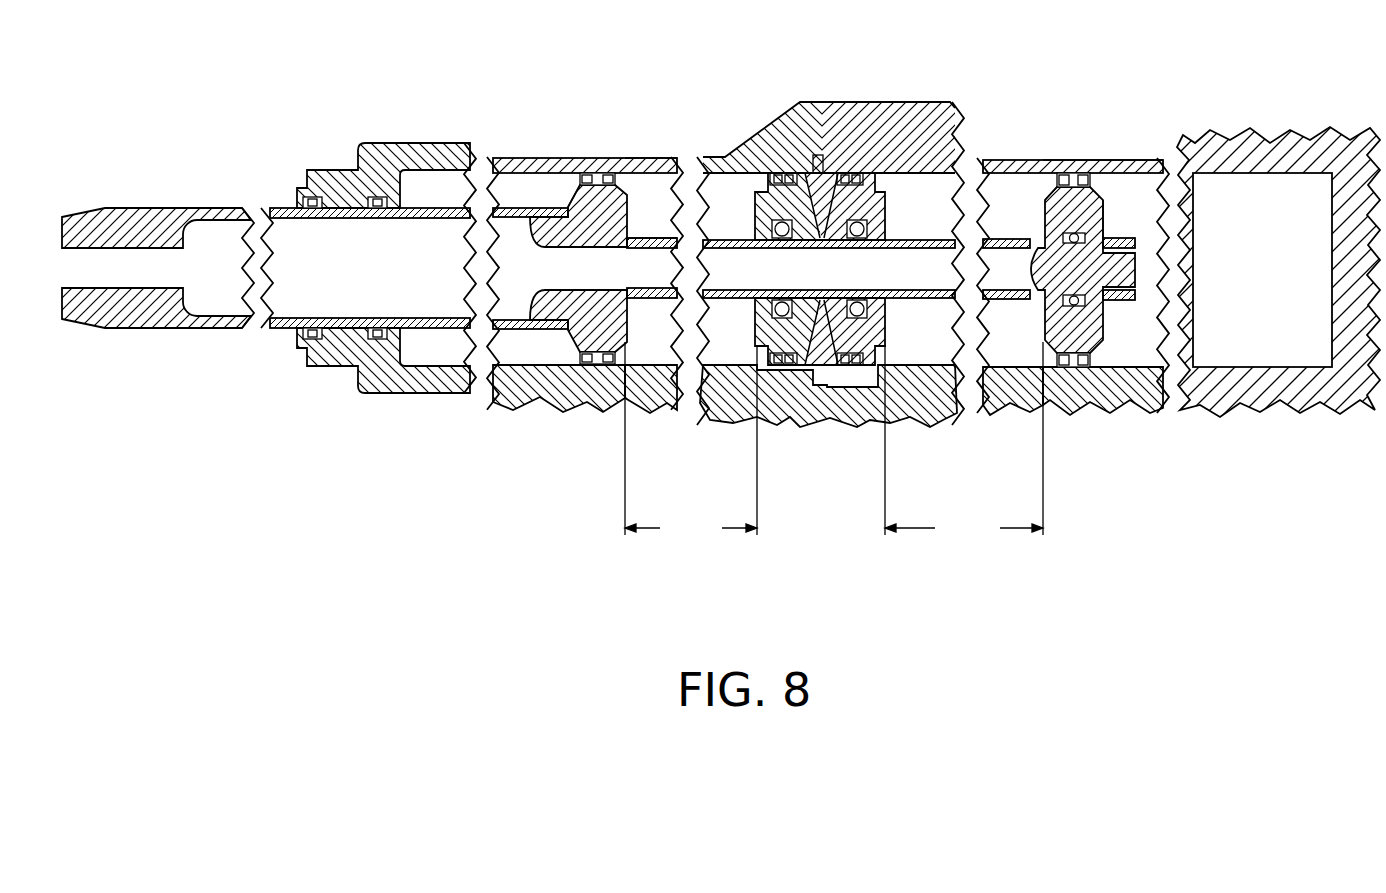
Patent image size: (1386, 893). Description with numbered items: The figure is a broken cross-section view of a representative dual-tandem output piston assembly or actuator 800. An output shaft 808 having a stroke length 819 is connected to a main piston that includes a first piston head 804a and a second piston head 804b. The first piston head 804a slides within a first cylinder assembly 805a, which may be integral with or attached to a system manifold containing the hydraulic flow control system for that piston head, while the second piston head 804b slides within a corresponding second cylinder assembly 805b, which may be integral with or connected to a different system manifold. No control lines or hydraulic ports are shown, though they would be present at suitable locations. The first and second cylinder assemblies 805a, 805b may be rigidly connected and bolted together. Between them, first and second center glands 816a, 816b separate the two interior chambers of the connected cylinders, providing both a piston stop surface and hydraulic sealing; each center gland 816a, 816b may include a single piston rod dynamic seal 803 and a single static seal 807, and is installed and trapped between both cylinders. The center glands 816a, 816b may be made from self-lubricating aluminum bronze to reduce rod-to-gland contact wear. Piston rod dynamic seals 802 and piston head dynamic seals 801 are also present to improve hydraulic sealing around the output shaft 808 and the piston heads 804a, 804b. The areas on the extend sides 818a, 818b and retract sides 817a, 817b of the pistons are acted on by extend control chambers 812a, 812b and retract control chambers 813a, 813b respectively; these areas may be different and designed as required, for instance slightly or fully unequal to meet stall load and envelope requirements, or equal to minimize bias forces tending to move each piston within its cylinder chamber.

The dual-tandem output piston assembly 800 is at (658, 36).
The piston head dynamic seal 801 is at (597, 175).
The piston rod dynamic seal 802 is at (302, 197).
The piston rod dynamic seal 803 is at (856, 286).
The first piston head 804a is at (595, 338).
The second piston head 804b is at (1073, 340).
The first cylinder assembly 805a is at (357, 367).
The second cylinder assembly 805b is at (1335, 393).
The static seal 807 is at (773, 173).
The output shaft 808 is at (168, 330).
The extend control chamber 812a is at (648, 358).
The extend control chamber 812b is at (1125, 360).
The retract control chamber 813a is at (547, 358).
The retract control chamber 813b is at (1022, 357).
The first center gland 816a is at (800, 182).
The second center gland 816b is at (830, 178).
The retract side area 817a is at (572, 195).
The retract side area 817b is at (1047, 195).
The extend side area 818a is at (635, 205).
The extend side area 818b is at (1110, 193).
The stroke length 819 is at (834, 444).